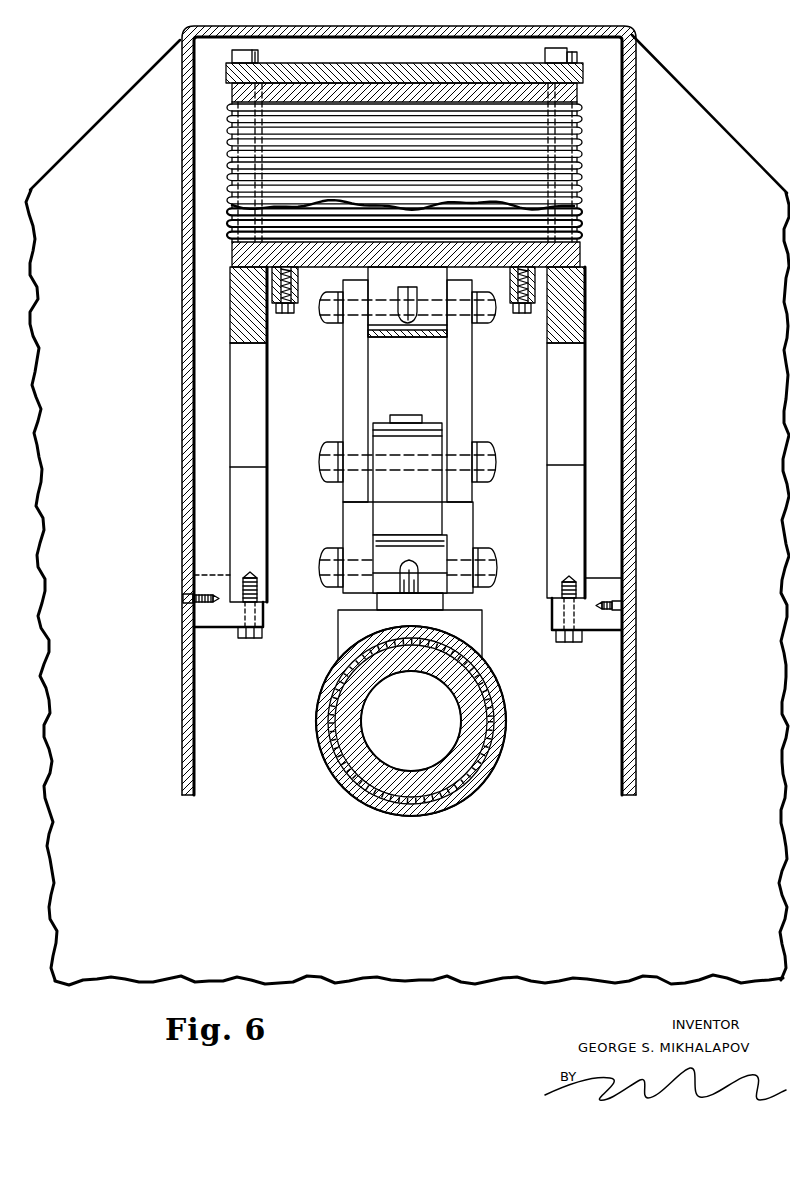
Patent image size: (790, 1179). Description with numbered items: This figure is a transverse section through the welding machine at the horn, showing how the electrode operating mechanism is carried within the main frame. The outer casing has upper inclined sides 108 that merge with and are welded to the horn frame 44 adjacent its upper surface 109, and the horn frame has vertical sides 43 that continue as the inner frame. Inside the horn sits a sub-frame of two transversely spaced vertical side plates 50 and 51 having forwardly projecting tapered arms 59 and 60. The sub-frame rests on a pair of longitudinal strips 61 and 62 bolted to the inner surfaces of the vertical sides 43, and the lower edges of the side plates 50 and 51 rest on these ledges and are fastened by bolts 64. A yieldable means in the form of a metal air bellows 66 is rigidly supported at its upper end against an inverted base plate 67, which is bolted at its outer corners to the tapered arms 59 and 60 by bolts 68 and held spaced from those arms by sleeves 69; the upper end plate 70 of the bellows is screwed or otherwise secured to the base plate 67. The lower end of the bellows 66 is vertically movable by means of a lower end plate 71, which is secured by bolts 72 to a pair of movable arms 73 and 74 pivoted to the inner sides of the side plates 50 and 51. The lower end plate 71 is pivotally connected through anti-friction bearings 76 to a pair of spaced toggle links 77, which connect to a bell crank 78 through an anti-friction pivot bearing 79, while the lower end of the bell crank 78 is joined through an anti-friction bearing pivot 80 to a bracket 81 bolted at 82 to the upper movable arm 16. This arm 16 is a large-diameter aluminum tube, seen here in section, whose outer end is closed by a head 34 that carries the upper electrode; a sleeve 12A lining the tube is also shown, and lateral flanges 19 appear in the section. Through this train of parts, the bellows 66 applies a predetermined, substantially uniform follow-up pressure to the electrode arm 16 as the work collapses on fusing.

The upper inclined sides 108 is at (73, 147).
The horn frame 44 is at (637, 305).
The vertical sides of horn frame 43 is at (185, 468).
The upper surface of horn frame 109 is at (333, 37).
The bolts 68 is at (232, 52).
The inverted base plate 67 is at (433, 72).
The upper end plate of bellows 70 is at (363, 95).
The metal air bellows 66 is at (594, 129).
The sleeves 69 is at (232, 148).
The lower end plate 71 is at (232, 256).
The movable arm 73 is at (298, 286).
The movable arm 74 is at (512, 282).
The bolts 72 is at (287, 313).
The side plate 50 is at (230, 357).
The side plate 51 is at (586, 376).
The tapered arm 60 is at (252, 447).
The tapered arm 59 is at (560, 402).
The longitudinal strip 62 is at (220, 618).
The longitudinal strip 61 is at (592, 618).
The bolts 64 is at (258, 636).
The anti-friction bearings 76 is at (478, 326).
The toggle links 77 is at (455, 375).
The anti-friction pivot bearing 79 is at (343, 445).
The lateral flanges 19 is at (475, 445).
The bell crank 78 is at (462, 518).
The anti-friction bearing pivot 80 is at (343, 556).
The bracket 81 is at (400, 552).
The bolts 82 is at (410, 590).
The upper movable arm 16 is at (478, 783).
The pipe insulation layer 12A is at (505, 735).
The head 34 is at (465, 712).